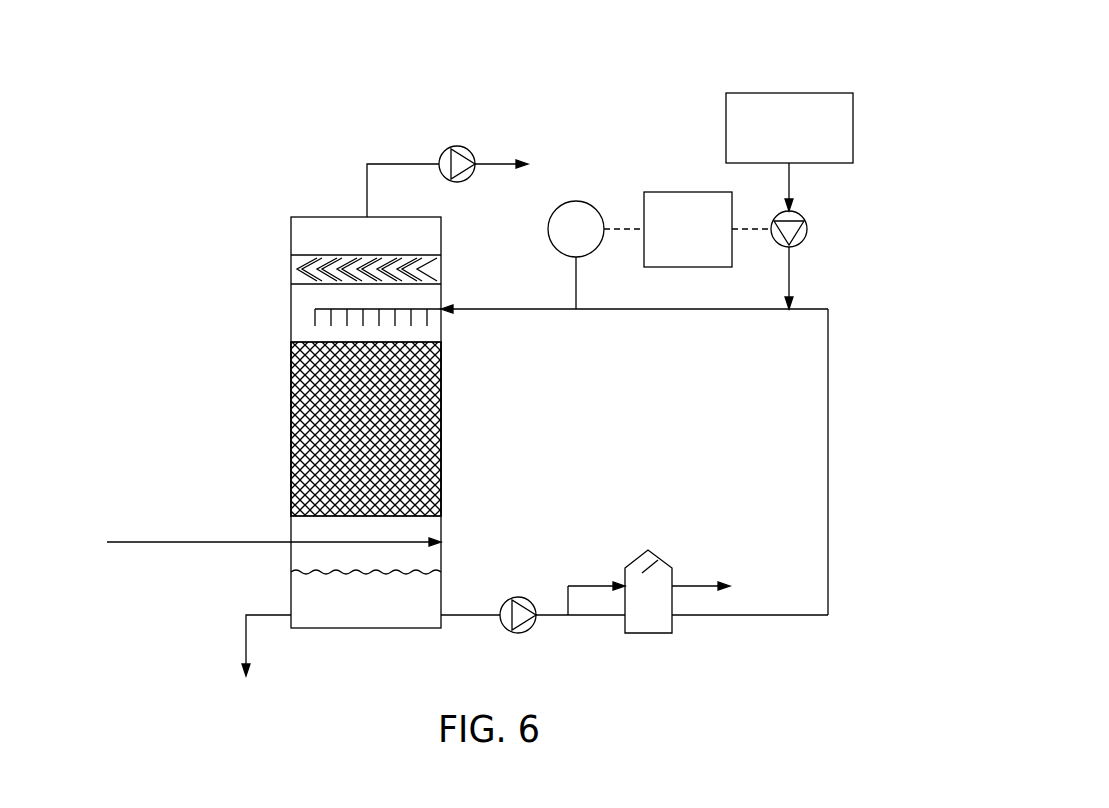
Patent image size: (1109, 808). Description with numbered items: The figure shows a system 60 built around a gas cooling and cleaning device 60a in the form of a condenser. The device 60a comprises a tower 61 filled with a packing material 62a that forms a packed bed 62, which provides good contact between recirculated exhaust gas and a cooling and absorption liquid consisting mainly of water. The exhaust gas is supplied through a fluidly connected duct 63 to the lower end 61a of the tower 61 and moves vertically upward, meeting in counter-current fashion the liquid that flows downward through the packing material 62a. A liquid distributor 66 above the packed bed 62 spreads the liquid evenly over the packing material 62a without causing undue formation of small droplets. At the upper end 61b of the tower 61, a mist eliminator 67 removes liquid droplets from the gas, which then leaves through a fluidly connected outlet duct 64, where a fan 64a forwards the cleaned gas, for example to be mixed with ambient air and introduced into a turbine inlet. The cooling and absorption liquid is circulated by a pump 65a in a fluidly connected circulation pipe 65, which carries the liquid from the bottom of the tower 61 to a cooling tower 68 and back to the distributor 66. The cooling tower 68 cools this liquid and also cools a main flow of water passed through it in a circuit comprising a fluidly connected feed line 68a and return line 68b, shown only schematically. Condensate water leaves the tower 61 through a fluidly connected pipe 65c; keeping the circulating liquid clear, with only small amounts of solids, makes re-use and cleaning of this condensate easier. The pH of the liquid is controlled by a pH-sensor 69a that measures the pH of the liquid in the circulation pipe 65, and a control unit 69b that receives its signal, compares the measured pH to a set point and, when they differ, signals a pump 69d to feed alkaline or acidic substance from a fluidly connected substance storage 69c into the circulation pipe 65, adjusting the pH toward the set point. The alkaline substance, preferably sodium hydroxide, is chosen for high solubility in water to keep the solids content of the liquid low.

The system 60 is at (636, 33).
The gas cooling and cleaning device 60a is at (270, 424).
The tower 61 is at (315, 217).
The lower end 61a is at (389, 557).
The upper end 61b is at (389, 248).
The packed bed 62 is at (422, 478).
The packing material 62a is at (395, 404).
The duct 63 is at (186, 542).
The outlet duct 64 is at (396, 164).
The fan 64a is at (452, 146).
The circulation pipe 65 is at (525, 311).
The pump 65a is at (524, 597).
The pipe 65c is at (246, 633).
The liquid distributor 66 is at (406, 309).
The mist eliminator 67 is at (293, 262).
The cooling tower 68 is at (658, 560).
The feed line 68a is at (598, 586).
The return line 68b is at (701, 586).
The pH-sensor 69a is at (576, 201).
The control unit 69b is at (688, 192).
The substance storage 69c is at (789, 93).
The pump 69d is at (806, 229).